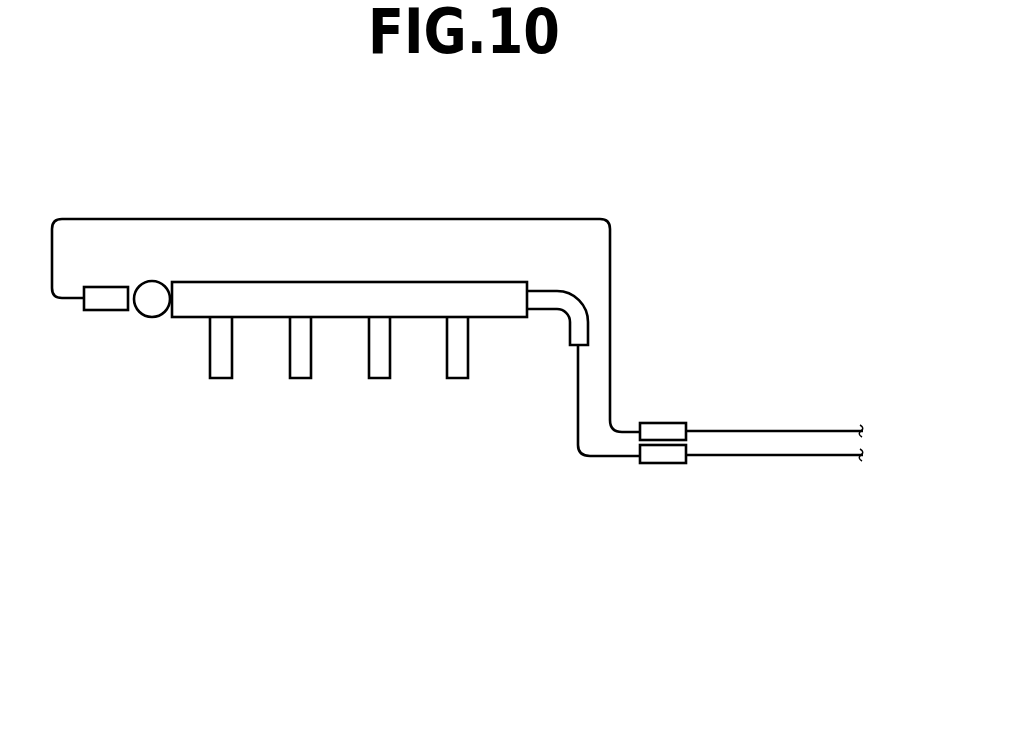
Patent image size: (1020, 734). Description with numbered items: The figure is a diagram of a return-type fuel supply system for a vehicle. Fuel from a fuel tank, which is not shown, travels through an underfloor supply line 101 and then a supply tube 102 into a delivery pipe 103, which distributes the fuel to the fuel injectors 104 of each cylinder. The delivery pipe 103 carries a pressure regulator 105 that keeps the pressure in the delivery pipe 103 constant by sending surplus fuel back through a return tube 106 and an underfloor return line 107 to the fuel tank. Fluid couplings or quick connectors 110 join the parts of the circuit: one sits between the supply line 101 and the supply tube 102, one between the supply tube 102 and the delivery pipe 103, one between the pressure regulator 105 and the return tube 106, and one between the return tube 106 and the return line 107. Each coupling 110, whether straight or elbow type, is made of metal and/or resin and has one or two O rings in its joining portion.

The underfloor supply line 101 is at (770, 460).
The supply tube 102 is at (582, 390).
The delivery pipe 103 is at (304, 292).
The fuel injectors 104 is at (300, 372).
The pressure regulator 105 is at (147, 290).
The return tube 106 is at (612, 262).
The underfloor return line 107 is at (828, 431).
The fluid couplings 110 is at (110, 311).